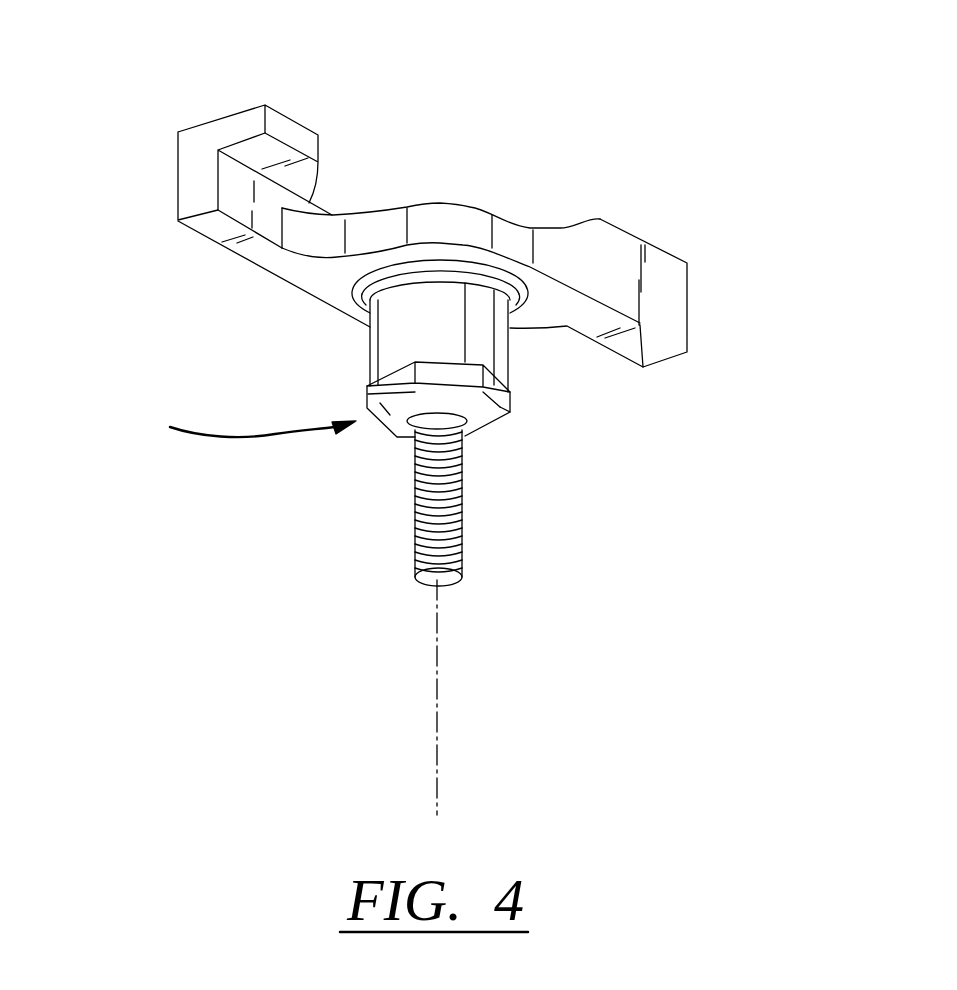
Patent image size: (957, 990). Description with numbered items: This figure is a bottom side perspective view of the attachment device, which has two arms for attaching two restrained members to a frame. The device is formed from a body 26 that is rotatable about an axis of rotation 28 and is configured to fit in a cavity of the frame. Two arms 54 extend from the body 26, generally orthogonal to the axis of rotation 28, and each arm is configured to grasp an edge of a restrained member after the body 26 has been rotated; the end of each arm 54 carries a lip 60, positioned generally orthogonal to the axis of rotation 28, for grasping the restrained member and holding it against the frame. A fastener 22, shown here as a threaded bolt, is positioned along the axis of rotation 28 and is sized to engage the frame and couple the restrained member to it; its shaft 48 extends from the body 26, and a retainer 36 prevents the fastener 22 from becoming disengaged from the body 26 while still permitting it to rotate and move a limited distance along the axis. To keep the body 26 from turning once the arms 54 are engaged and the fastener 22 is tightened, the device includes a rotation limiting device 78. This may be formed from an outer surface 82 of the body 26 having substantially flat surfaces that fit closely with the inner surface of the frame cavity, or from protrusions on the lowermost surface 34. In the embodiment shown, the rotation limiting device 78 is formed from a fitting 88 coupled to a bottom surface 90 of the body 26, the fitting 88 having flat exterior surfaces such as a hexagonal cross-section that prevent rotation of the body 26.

The fastener 22 is at (412, 532).
The body 26 is at (392, 343).
The axis of rotation 28 is at (437, 690).
The lowermost surface 34 is at (390, 423).
The retainer 36 is at (467, 437).
The shaft 48 is at (415, 577).
The arm 54 is at (178, 193).
The lip 60 is at (238, 134).
The rotation limiting device 78 is at (223, 438).
The outer surface 82 is at (510, 400).
The fitting 88 is at (490, 413).
The bottom surface 90 is at (367, 397).